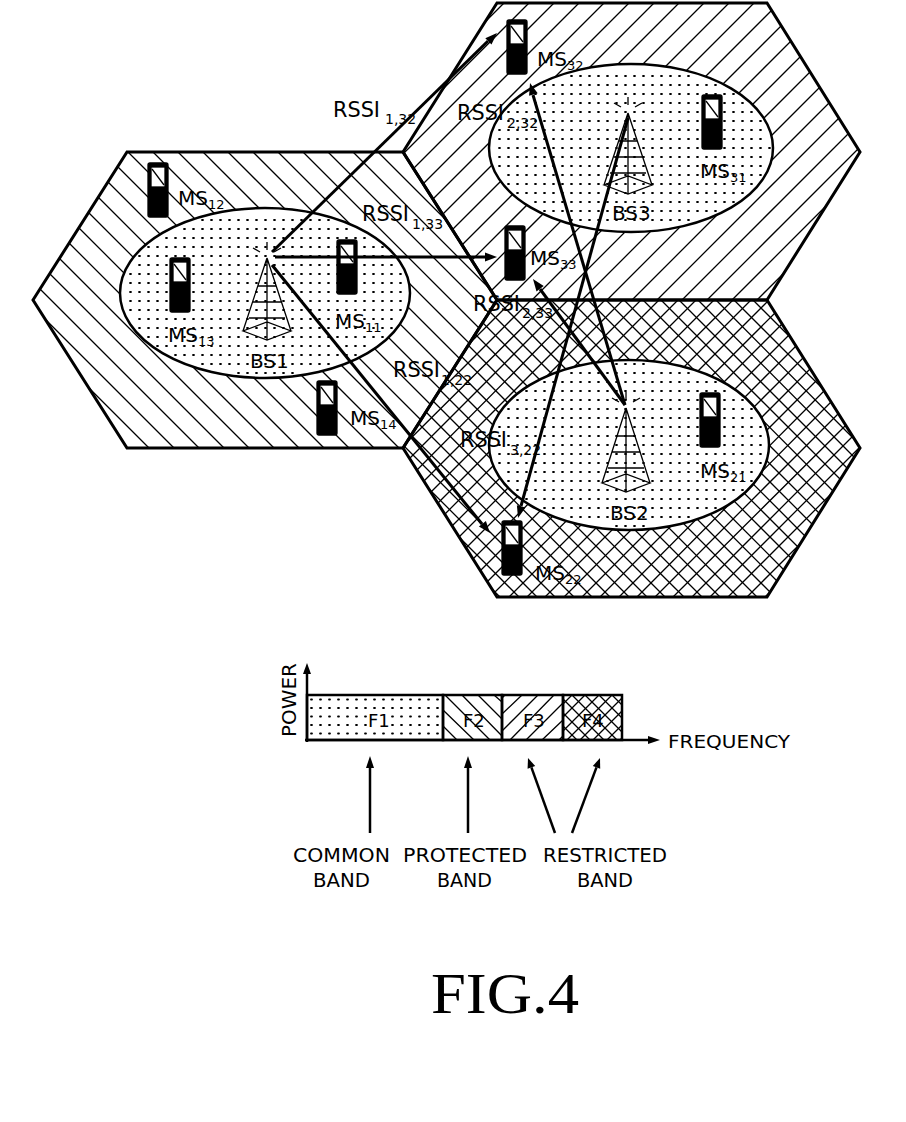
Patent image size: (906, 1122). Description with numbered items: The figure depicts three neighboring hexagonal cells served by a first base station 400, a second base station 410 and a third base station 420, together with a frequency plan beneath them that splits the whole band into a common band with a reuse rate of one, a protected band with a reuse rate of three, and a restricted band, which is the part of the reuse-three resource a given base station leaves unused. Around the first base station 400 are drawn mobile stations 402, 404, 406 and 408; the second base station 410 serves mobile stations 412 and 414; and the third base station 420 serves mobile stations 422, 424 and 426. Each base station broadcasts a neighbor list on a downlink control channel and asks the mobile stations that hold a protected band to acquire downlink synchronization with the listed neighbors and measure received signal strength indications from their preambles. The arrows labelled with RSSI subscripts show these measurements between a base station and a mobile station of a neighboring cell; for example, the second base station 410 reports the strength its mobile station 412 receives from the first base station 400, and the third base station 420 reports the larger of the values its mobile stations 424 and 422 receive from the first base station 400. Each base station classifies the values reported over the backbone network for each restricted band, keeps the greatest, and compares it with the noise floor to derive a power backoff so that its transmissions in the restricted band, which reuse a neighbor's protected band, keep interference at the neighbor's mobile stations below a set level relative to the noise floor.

The base station BS1 400 is at (256, 277).
The mobile station MS12 402 is at (154, 219).
The mobile station MS11 404 is at (358, 283).
The mobile station MS13 406 is at (170, 292).
The mobile station MS14 408 is at (316, 410).
The base station BS2 410 is at (611, 447).
The mobile station MS22 412 is at (523, 551).
The mobile station MS21 414 is at (699, 422).
The base station BS3 420 is at (613, 152).
The mobile station MS33 422 is at (505, 233).
The mobile station MS32 424 is at (528, 43).
The mobile station MS31 426 is at (702, 125).